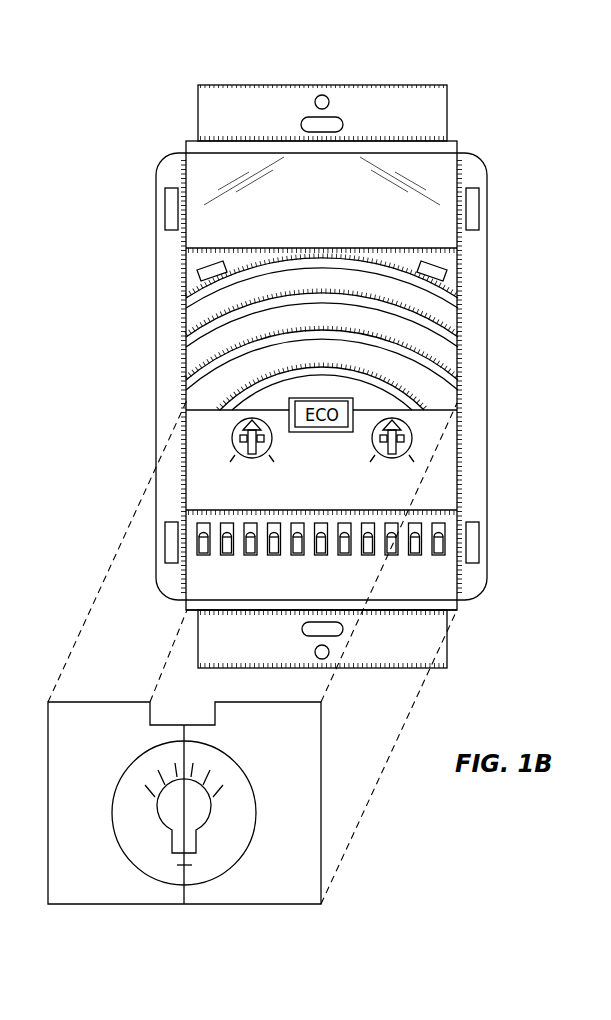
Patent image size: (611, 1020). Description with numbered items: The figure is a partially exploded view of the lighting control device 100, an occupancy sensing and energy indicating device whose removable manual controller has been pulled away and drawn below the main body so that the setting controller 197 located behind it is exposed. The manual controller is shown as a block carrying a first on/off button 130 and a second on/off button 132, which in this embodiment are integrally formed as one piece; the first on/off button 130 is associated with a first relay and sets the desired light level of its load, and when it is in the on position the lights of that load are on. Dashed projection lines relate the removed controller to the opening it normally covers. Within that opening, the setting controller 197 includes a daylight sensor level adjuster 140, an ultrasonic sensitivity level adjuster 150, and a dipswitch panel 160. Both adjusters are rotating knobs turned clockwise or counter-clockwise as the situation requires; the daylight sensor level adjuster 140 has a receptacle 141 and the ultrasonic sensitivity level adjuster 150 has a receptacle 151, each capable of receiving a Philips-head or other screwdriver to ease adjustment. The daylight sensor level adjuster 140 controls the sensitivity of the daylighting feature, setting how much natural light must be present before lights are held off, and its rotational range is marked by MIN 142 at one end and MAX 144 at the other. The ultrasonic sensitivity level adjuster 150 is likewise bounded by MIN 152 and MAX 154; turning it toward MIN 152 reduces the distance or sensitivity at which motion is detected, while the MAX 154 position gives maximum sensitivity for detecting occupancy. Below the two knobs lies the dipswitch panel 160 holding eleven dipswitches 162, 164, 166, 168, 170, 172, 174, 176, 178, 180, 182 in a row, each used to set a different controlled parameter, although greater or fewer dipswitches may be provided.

The lighting control device 100 is at (137, 85).
The first on/off button 130 is at (93, 710).
The second on/off button 132 is at (310, 739).
The daylight sensor level adjuster 140 is at (237, 435).
The receptacle 141 is at (243, 427).
The MIN 142 is at (228, 453).
The MAX 144 is at (240, 438).
The ultrasonic sensitivity level adjuster 150 is at (407, 435).
The receptacle 151 is at (401, 427).
The MIN 152 is at (404, 440).
The MAX 154 is at (416, 453).
The dipswitch panel 160 is at (446, 598).
The dipswitch 162 is at (204, 528).
The dipswitch 164 is at (222, 546).
The dipswitch 166 is at (252, 524).
The dipswitch 168 is at (283, 548).
The dipswitch 170 is at (300, 524).
The dipswitch 172 is at (330, 548).
The dipswitch 174 is at (345, 524).
The dipswitch 176 is at (372, 524).
The dipswitch 178 is at (400, 548).
The dipswitch 180 is at (424, 548).
The dipswitch 182 is at (443, 525).
The setting controller 197 is at (198, 493).